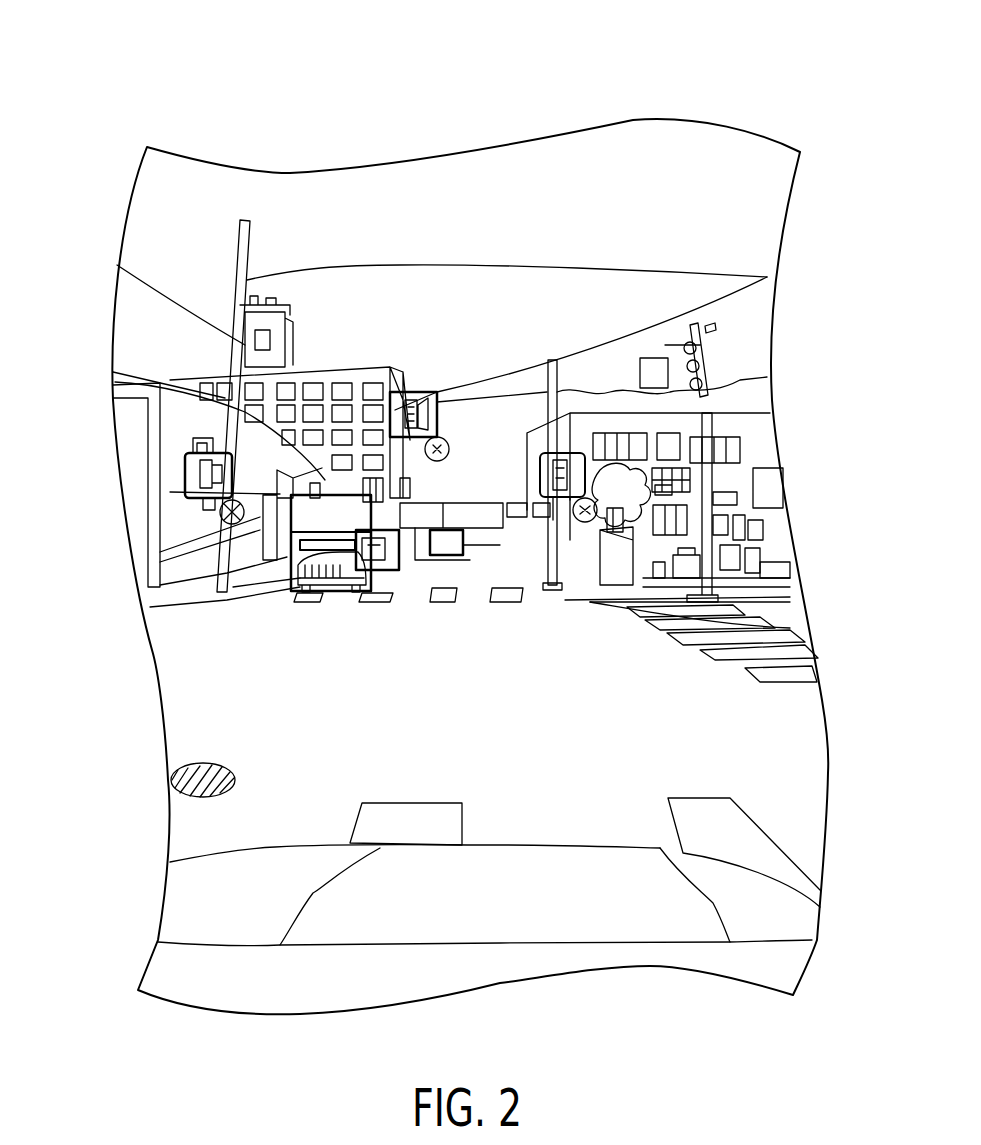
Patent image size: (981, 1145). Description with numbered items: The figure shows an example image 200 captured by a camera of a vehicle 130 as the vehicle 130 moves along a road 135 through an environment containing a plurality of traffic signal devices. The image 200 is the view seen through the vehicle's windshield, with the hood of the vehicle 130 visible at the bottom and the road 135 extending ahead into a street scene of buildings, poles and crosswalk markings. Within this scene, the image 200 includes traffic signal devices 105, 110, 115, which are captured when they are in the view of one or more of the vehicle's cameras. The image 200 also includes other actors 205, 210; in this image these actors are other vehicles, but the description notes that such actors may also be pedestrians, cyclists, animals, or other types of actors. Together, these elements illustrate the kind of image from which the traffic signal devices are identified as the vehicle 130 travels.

The image 200 is at (480, 90).
The traffic signal device 105 is at (390, 408).
The traffic signal device 110 is at (190, 490).
The traffic signal device 115 is at (400, 548).
The actor 205 is at (597, 506).
The actor 210 is at (300, 572).
The vehicle 130 is at (192, 932).
The road 135 is at (812, 785).